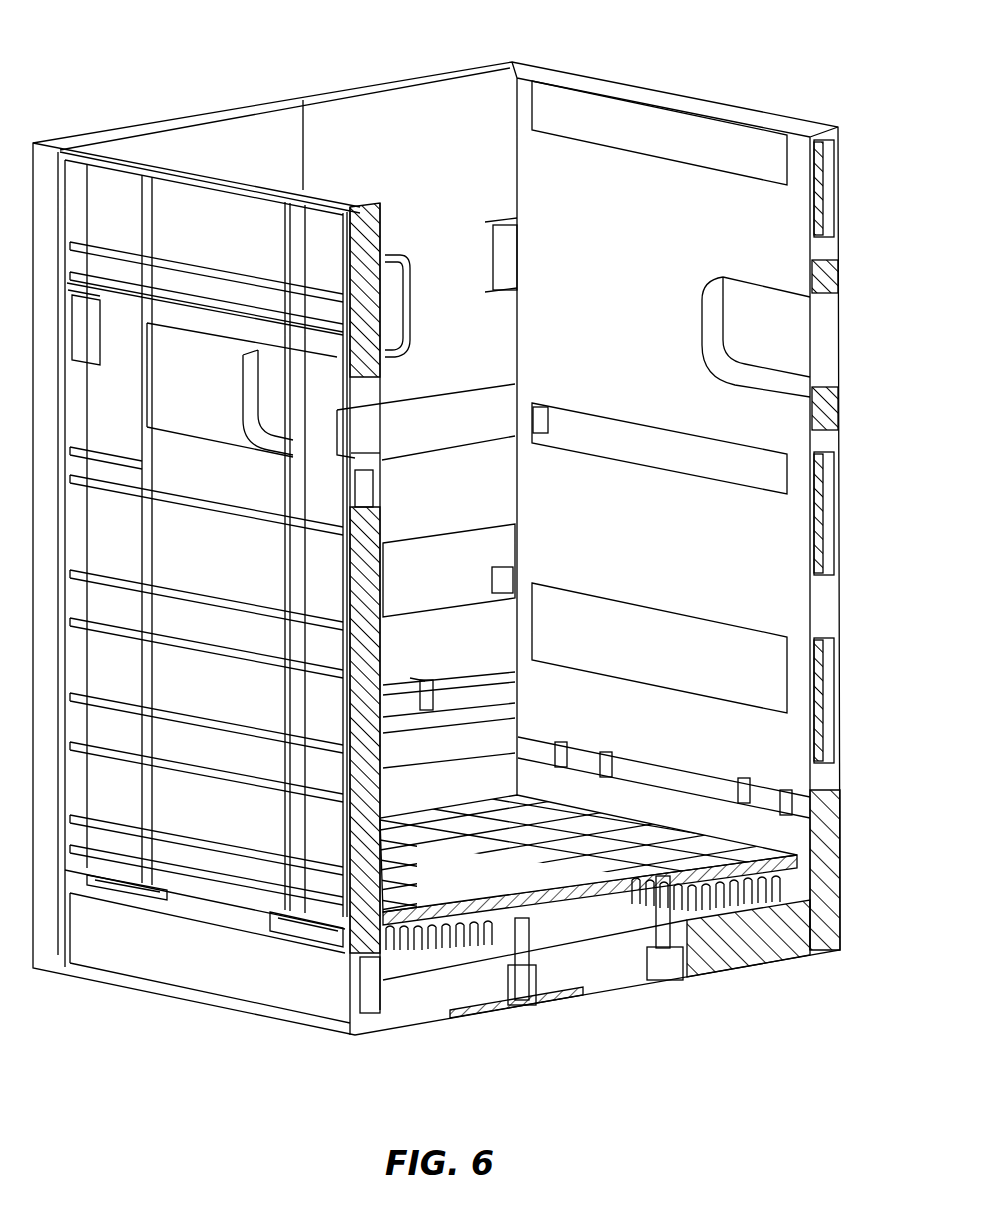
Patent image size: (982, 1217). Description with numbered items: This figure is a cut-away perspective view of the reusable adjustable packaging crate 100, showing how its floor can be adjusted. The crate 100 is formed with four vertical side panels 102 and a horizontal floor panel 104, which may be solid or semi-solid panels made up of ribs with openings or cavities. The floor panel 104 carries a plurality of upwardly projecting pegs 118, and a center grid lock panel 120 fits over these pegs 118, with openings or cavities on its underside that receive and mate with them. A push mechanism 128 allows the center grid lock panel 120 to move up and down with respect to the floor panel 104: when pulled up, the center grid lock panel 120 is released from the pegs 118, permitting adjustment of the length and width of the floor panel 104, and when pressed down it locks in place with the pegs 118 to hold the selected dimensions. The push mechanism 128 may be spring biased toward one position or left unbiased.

The reusable adjustable packaging crate 100 is at (300, 78).
The vertical side panels 102 is at (790, 583).
The horizontal floor panel 104 is at (825, 950).
The upwardly projecting pegs 118 is at (778, 895).
The center grid lock panel 120 is at (795, 857).
The push mechanism 128 is at (523, 985).